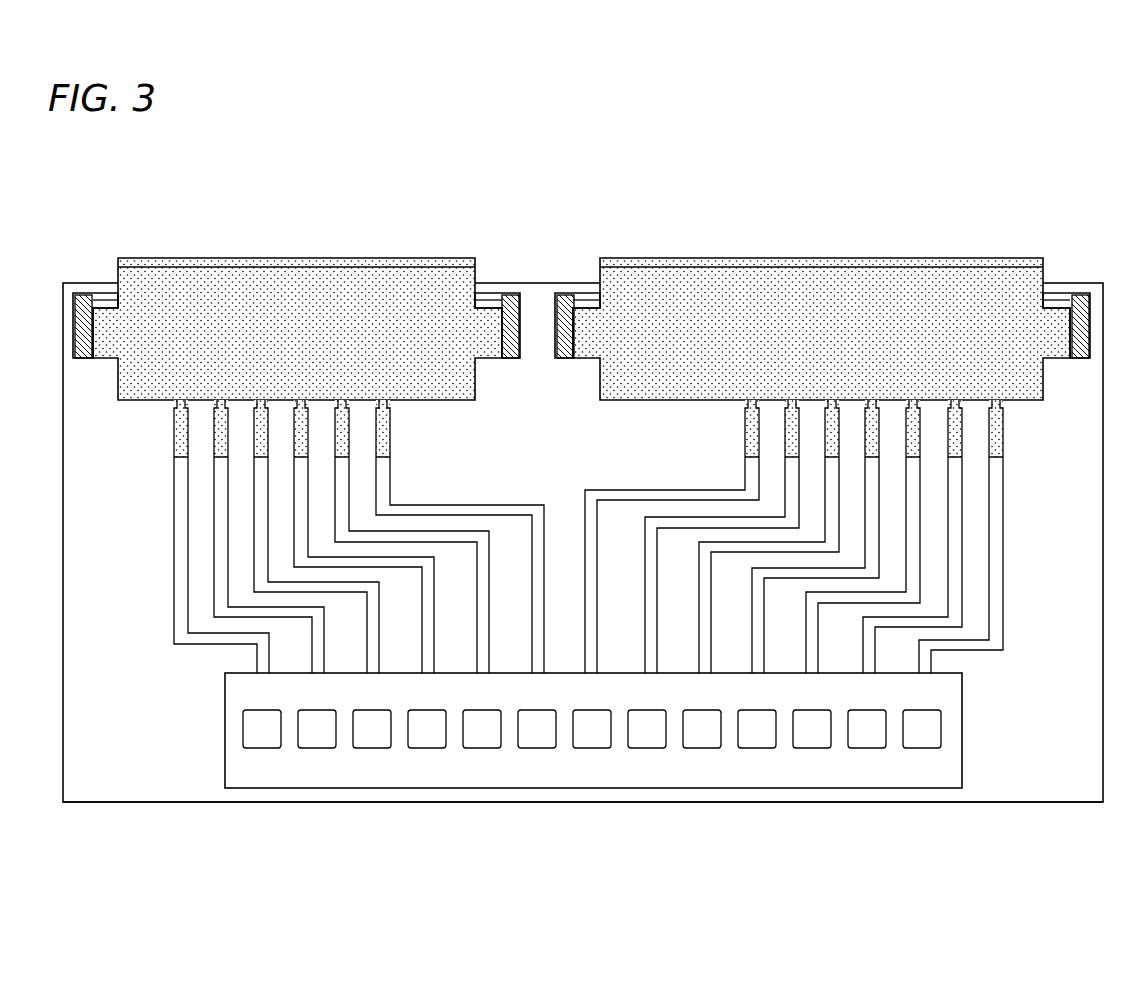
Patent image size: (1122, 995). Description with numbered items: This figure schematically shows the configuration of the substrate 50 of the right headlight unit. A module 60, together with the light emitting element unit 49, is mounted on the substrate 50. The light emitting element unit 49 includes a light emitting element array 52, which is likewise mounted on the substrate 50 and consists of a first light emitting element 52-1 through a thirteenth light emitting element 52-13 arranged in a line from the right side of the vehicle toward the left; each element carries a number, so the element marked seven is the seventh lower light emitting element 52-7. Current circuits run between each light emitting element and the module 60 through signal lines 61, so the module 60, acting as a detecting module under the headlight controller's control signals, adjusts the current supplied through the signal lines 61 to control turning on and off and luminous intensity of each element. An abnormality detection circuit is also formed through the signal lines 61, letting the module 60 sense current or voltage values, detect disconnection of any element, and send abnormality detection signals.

The light emitting element unit 49 is at (685, 800).
The substrate 50 is at (338, 775).
The light emitting element array 52 is at (982, 716).
The first light emitting element 52-1 is at (243, 735).
The seventh lower light emitting element 52-7 is at (585, 750).
The thirteenth light emitting element 52-13 is at (912, 750).
The module 60 is at (598, 278).
The signal lines 61 is at (962, 572).